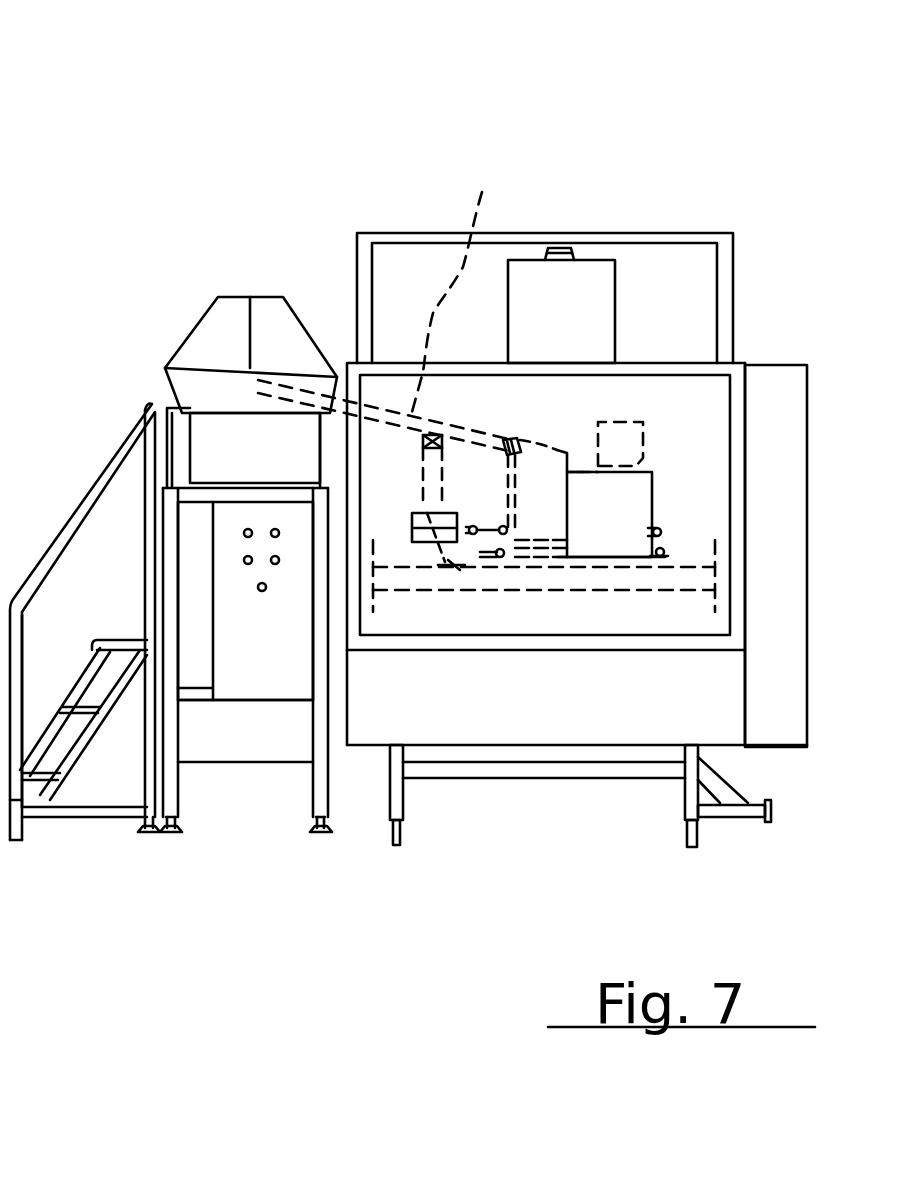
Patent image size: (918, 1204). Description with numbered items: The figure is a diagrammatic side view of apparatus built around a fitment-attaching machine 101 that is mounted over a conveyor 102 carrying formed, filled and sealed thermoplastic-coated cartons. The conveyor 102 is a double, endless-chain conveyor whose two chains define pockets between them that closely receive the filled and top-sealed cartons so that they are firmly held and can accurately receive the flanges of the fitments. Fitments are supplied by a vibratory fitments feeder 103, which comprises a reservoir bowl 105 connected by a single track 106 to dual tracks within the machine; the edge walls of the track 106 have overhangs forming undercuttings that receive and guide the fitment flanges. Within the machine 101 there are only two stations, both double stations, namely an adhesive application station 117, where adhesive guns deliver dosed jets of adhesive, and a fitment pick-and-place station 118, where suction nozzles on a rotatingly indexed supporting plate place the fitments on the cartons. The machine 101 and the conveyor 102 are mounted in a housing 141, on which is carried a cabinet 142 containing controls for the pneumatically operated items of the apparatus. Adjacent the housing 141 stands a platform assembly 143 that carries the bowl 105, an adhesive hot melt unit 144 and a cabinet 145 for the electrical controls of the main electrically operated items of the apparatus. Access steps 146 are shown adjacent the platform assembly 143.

The fitment-attaching machine 101 is at (653, 433).
The conveyor 102 is at (610, 593).
The vibratory fitments feeder 103 is at (322, 323).
The reservoir bowl 105 is at (238, 398).
The single track 106 is at (483, 289).
The adhesive application station 117 is at (597, 562).
The fitment pick-and-place station 118 is at (533, 563).
The housing 141 is at (500, 728).
The cabinet 142 is at (560, 306).
The platform assembly 143 is at (262, 770).
The adhesive hot melt unit 144 is at (176, 437).
The cabinet 145 is at (270, 635).
The access steps 146 is at (92, 813).